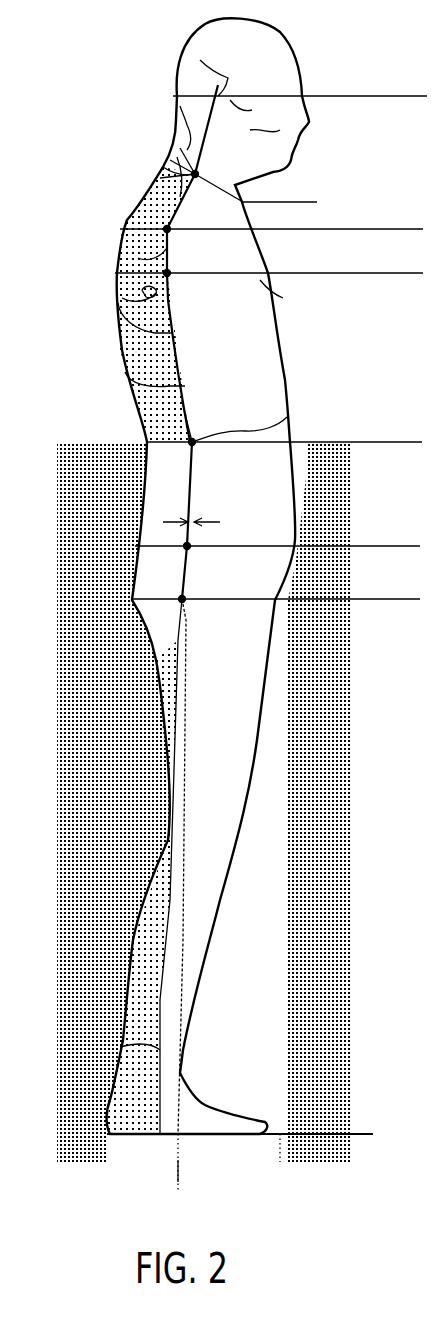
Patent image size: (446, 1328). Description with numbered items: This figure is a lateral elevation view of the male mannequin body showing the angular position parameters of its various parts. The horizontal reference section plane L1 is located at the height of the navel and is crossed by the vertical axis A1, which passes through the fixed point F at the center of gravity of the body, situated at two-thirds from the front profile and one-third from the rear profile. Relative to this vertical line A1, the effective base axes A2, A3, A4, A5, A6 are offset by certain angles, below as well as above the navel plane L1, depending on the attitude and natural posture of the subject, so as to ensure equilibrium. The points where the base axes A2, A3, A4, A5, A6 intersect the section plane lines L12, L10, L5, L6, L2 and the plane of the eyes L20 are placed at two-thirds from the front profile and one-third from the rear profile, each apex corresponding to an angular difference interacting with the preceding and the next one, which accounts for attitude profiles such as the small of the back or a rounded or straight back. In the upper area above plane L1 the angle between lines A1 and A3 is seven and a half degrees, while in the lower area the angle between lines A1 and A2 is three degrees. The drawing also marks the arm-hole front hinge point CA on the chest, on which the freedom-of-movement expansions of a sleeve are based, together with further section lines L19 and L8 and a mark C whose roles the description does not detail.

The plane of the eyes L20 is at (403, 96).
The neck line L19 is at (317, 202).
The section plane line L6 is at (378, 229).
The section plane line L5 is at (405, 273).
The reference section plane L1 is at (373, 442).
The section plane line L10 is at (373, 546).
The upper thigh line L8 is at (393, 599).
The section plane line L12 is at (347, 1134).
The section plane line L2 is at (180, 148).
The effective base axis A6 is at (187, 125).
The effective base axis A5 is at (172, 178).
The effective base axis A4 is at (138, 258).
The effective base axis A3 is at (118, 303).
The effective base axis A2 is at (120, 1047).
The vertical axis A1 is at (178, 1182).
The fixed point F is at (287, 417).
The arm-hole front hinge point CA is at (283, 298).
The reference mark C is at (440, 987).